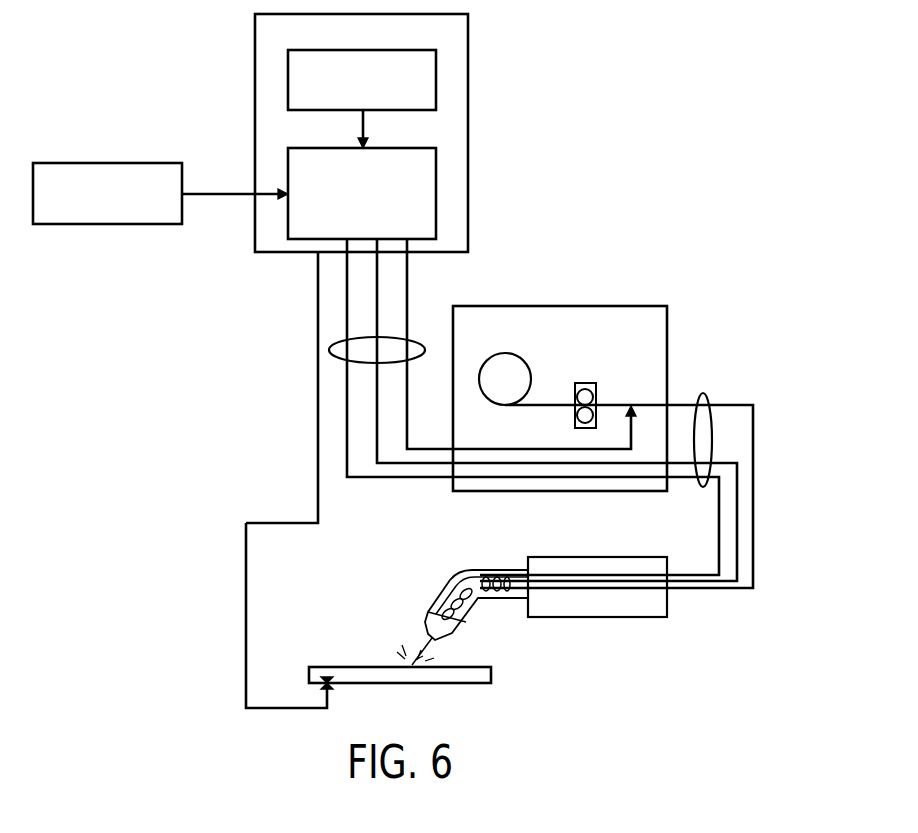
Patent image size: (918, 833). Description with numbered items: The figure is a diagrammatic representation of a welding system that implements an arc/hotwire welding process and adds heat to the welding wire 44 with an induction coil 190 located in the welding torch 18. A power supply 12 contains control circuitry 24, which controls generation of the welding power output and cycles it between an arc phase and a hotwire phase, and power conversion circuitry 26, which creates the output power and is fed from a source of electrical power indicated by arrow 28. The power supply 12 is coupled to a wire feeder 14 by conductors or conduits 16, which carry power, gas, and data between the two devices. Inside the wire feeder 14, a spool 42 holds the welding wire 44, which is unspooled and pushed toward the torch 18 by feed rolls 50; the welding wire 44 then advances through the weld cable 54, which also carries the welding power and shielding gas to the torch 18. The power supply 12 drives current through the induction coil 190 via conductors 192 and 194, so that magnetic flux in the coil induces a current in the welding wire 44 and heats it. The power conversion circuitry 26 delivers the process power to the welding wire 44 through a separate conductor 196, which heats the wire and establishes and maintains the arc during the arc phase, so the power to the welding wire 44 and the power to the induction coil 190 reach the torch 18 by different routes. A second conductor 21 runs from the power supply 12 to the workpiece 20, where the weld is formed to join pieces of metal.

The power supply 12 is at (253, 133).
The wire feeder 14 is at (560, 303).
The conductors or conduits 16 is at (417, 342).
The welding torch 18 is at (556, 630).
The workpiece 20 is at (308, 672).
The second conductor 21 is at (280, 522).
The control circuitry 24 is at (402, 110).
The power conversion circuitry 26 is at (327, 148).
The source of electrical power 28 is at (107, 162).
The spool 42 is at (494, 391).
The welding wire 44 is at (680, 403).
The feed rolls 50 is at (596, 388).
The weld cable 54 is at (707, 397).
The induction coil 190 is at (475, 603).
The conductor 192 is at (346, 308).
The conductor 194 is at (375, 458).
The separate conductor 196 is at (408, 422).